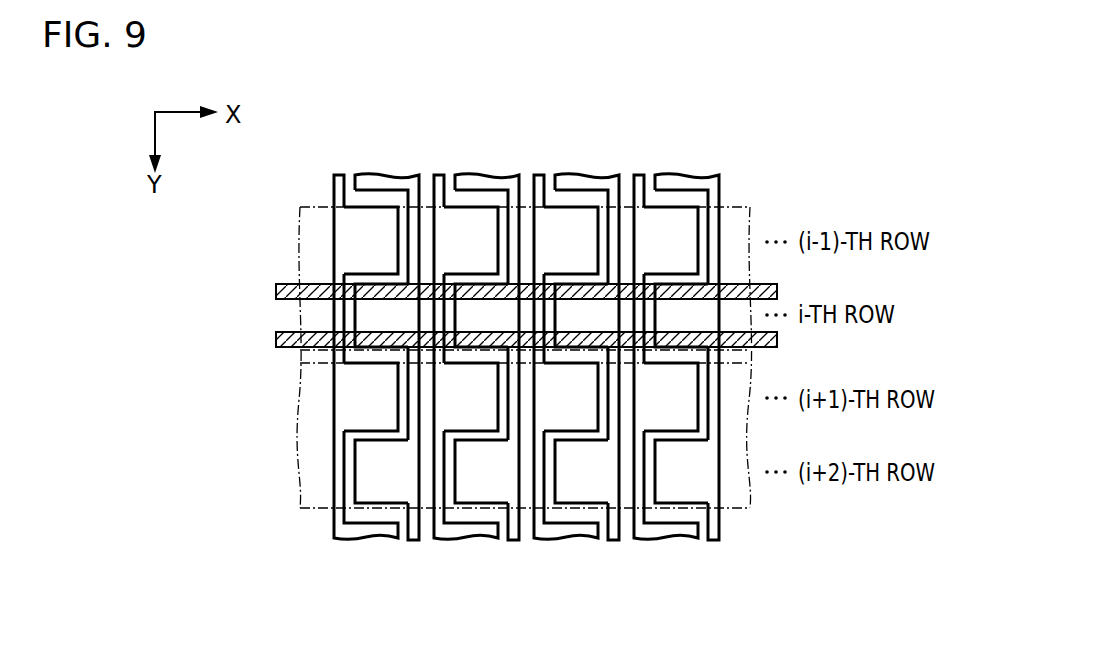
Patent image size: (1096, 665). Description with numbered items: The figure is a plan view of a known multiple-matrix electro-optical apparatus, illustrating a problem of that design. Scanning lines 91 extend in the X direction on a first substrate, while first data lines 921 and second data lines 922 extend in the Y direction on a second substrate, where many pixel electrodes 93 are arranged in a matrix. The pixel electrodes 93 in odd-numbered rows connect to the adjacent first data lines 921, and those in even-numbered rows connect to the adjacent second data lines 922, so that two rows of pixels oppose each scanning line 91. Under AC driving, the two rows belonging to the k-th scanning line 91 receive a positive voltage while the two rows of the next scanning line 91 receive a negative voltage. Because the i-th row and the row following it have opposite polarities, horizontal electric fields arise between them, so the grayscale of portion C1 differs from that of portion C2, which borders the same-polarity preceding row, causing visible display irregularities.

The scanning line 91 is at (298, 243).
The pixel electrode 93 is at (342, 234).
The first data line 921 is at (339, 175).
The second data line 922 is at (412, 542).
The portion C1 is at (276, 340).
The portion C2 is at (777, 289).